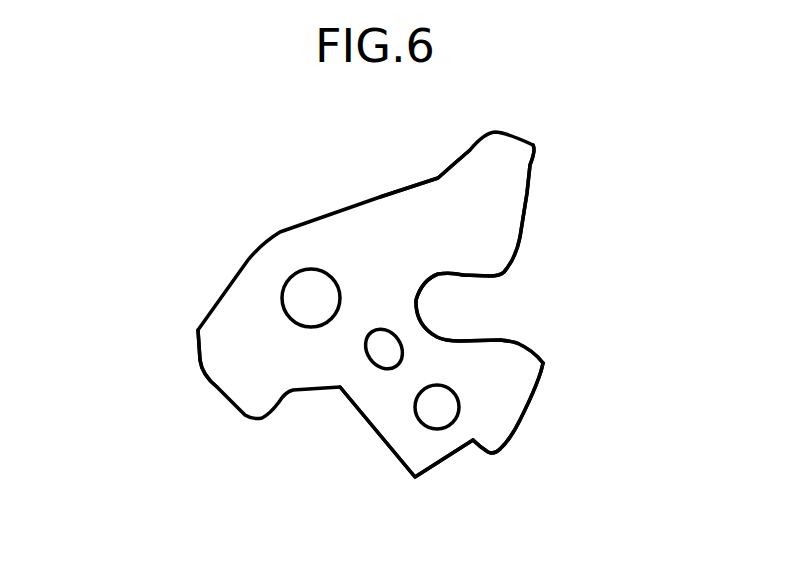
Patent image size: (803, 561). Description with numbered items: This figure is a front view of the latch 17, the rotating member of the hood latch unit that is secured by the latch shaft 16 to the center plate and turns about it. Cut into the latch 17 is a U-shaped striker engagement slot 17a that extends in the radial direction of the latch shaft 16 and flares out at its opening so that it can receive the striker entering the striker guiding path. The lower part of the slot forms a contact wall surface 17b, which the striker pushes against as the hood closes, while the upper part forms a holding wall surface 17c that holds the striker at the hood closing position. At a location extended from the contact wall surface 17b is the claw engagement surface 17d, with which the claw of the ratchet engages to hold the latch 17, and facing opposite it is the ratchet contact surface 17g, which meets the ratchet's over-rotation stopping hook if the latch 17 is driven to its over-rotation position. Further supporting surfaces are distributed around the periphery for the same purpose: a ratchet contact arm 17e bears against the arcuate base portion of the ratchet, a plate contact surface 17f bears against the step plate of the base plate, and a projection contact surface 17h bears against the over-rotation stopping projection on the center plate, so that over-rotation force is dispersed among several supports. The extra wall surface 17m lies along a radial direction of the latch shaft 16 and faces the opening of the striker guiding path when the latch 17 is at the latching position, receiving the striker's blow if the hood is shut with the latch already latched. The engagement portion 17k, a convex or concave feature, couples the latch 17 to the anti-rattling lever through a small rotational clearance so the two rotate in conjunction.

The latch shaft 16 is at (297, 293).
The latch 17 is at (352, 227).
The extra wall surface 17m is at (455, 163).
The ratchet contact arm 17e is at (533, 180).
The holding wall surface 17c is at (465, 272).
The striker engagement slot 17a is at (468, 309).
The claw engagement surface 17d is at (528, 352).
The contact wall surface 17b is at (457, 341).
The ratchet contact surface 17g is at (486, 446).
The engagement portion 17k is at (437, 407).
The projection contact surface 17h is at (370, 440).
The plate contact surface 17f is at (198, 355).